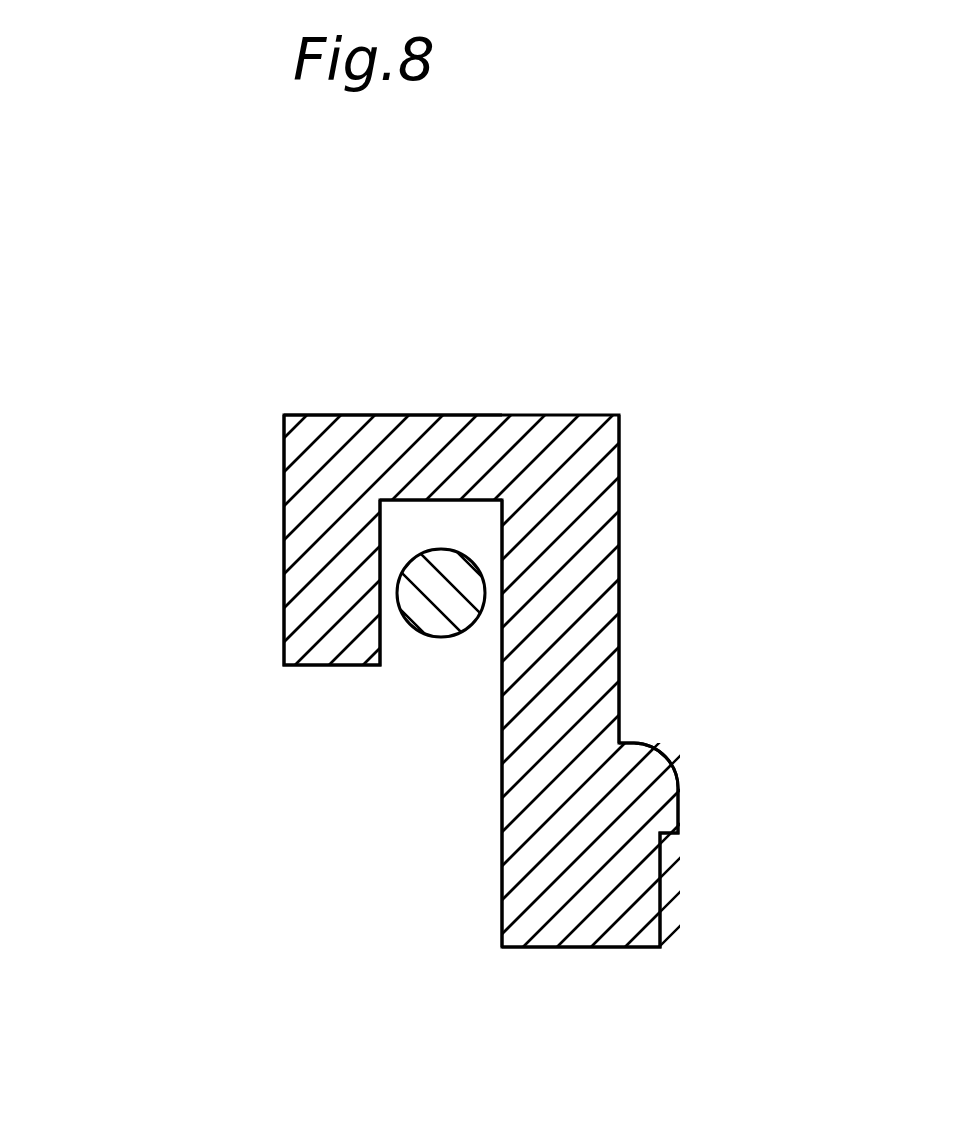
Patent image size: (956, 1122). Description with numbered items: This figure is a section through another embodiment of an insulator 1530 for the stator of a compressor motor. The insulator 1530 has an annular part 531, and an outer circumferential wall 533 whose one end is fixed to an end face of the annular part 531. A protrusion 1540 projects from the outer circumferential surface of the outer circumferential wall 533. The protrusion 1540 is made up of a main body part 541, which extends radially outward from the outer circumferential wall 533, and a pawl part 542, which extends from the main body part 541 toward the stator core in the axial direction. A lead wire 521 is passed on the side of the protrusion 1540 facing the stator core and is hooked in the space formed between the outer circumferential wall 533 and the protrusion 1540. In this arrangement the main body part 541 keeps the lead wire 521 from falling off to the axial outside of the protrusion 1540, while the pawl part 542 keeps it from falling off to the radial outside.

The insulator 1530 is at (538, 413).
The protrusion 1540 is at (243, 252).
The main body part 541 is at (398, 435).
The pawl part 542 is at (310, 560).
The outer circumferential wall 533 is at (610, 580).
The annular part 531 is at (633, 883).
The lead wire 521 is at (432, 625).